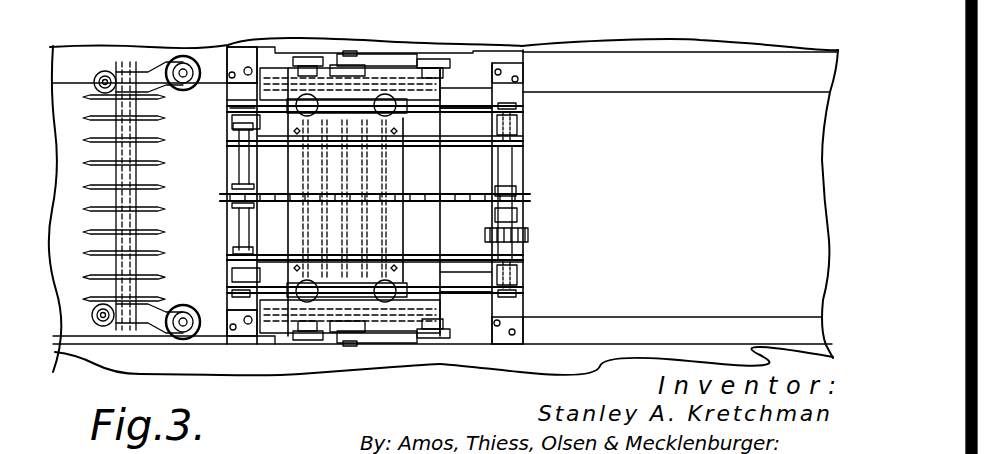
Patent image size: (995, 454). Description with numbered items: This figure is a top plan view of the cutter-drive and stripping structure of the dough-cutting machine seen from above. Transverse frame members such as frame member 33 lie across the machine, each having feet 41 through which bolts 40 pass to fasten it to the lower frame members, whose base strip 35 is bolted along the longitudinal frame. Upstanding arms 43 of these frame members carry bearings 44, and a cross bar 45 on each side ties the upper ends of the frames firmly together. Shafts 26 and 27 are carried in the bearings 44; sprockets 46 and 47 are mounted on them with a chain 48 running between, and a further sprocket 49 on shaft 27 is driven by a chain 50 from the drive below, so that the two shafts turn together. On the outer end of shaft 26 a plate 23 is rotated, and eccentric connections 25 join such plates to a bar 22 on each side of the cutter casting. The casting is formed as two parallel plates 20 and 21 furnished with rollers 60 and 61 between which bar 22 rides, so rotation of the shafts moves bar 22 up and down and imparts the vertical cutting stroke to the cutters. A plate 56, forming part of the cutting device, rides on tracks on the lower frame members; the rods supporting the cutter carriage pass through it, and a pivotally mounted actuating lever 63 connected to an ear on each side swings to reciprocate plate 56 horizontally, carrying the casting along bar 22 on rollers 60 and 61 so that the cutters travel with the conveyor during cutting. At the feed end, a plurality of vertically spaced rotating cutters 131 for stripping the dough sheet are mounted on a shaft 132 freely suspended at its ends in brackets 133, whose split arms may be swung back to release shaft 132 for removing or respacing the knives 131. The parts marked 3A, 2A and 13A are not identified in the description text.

The brackets 133 is at (145, 74).
The lower arm with guide rollers 13A is at (146, 328).
The bolts 40 is at (232, 72).
The feet 41 is at (249, 67).
The actuating lever 63 is at (378, 55).
The side frame member 3A is at (228, 95).
The base strip 35 is at (229, 108).
The plate 23 is at (232, 122).
The bearings 44 is at (236, 133).
The upstanding arms 43 is at (228, 140).
The shaft 26 is at (238, 152).
The rotating cutters 131 is at (90, 143).
The shaft 132 is at (128, 218).
The sprocket 46 is at (228, 212).
The eccentric connections 25 is at (232, 293).
The parallel plate 20 is at (408, 302).
The roller 60 is at (298, 110).
The parallel plate 21 is at (294, 131).
The roller 61 is at (394, 112).
The bar 22 is at (468, 110).
The cross bar 45 is at (468, 140).
The plate 56 is at (404, 170).
The chain 48 is at (460, 194).
The frame member 33 is at (520, 100).
The bearing housing 2A is at (520, 119).
The shaft 27 is at (513, 163).
The sprocket 47 is at (518, 187).
The sprocket 49 is at (519, 216).
The chain 50 is at (530, 236).